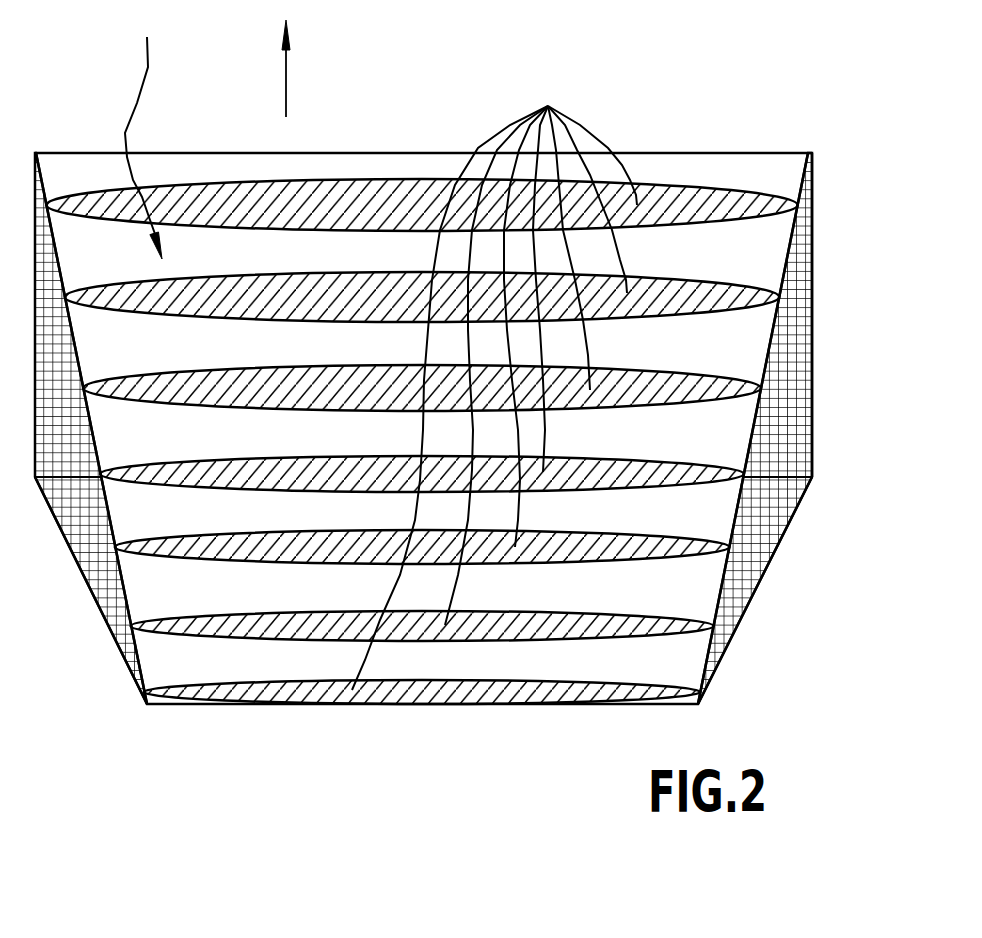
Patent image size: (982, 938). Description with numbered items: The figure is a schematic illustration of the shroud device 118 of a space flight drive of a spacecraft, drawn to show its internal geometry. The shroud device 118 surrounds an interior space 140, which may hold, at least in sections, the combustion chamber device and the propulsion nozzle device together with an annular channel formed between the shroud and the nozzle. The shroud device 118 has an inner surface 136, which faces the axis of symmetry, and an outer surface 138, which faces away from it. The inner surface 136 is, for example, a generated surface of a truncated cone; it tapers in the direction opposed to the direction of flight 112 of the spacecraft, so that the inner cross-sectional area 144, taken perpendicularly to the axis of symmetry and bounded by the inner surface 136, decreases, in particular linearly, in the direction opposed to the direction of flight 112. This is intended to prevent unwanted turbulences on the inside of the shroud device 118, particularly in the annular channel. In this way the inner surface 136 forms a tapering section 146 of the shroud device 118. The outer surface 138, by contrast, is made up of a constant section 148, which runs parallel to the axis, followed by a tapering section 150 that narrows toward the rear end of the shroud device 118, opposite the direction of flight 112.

The direction of flight 112 is at (285, 82).
The shroud device 118 is at (808, 258).
The inner surface 136 is at (808, 173).
The outer surface 138 is at (812, 308).
The interior space 140 is at (145, 135).
The inner cross-sectional area 144 is at (494, 383).
The tapering section 146 is at (790, 258).
The constant section 148 is at (812, 373).
The tapering section 150 is at (772, 553).